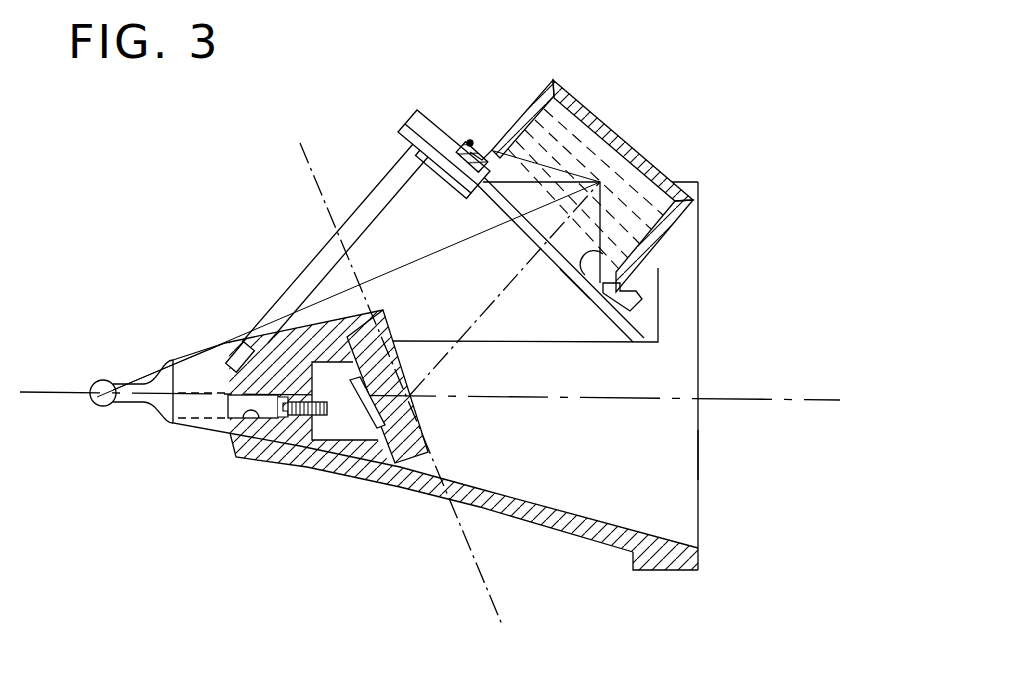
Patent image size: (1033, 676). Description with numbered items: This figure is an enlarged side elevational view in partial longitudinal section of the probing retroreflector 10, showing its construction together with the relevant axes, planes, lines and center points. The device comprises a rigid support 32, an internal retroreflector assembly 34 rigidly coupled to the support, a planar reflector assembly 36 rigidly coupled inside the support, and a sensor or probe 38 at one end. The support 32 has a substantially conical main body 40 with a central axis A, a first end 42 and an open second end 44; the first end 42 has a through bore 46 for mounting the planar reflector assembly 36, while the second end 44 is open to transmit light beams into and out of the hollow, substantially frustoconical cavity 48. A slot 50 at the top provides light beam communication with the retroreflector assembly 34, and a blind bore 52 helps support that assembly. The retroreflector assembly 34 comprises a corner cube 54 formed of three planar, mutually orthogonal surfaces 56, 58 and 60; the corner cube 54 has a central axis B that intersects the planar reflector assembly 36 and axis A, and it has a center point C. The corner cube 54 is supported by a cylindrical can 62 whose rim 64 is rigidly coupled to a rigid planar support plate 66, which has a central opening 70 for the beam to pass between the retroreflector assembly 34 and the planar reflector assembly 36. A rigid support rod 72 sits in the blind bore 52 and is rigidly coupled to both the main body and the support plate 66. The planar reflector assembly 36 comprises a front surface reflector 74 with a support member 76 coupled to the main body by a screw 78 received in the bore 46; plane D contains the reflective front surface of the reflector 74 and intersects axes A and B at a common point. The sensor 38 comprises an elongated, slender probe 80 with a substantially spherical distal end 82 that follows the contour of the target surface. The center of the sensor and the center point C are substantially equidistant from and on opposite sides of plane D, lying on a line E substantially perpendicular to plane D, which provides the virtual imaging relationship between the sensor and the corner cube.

The probing retroreflector 10 is at (619, 146).
The rigid support 32 is at (606, 557).
The internal retroreflector assembly 34 is at (522, 90).
The planar reflector assembly 36 is at (386, 462).
The sensor or probe 38 is at (136, 358).
The main body 40 is at (417, 495).
The first end 42 is at (195, 430).
The second end 44 is at (700, 514).
The through bore 46 is at (247, 425).
The frustoconical cavity 48 is at (700, 455).
The slot 50 is at (547, 344).
The blind bore 52 is at (240, 343).
The corner cube 54 is at (655, 172).
The planar surface 56 is at (583, 282).
The planar surface 58 is at (505, 186).
The planar surface 60 is at (568, 240).
The cylindrical can 62 is at (580, 94).
The rim 64 is at (482, 146).
The support plate 66 is at (436, 108).
The central opening 70 is at (638, 306).
The support rod 72 is at (365, 194).
The front surface reflector 74 is at (430, 439).
The support member 76 is at (337, 443).
The screw 78 is at (283, 432).
The probe 80 is at (141, 408).
The spherical distal end 82 is at (99, 433).
The central axis A is at (800, 396).
The central axis B is at (464, 329).
The center point C is at (604, 174).
The plane D is at (486, 571).
The line E is at (399, 260).